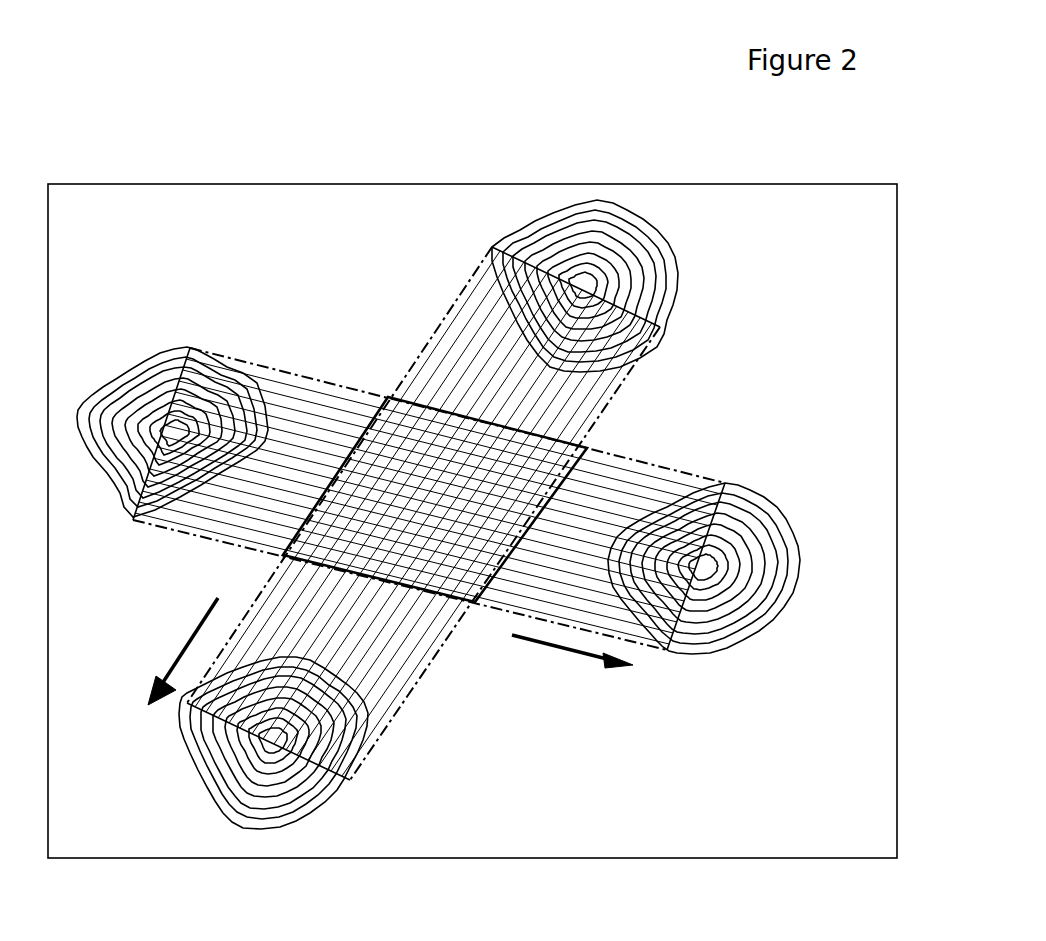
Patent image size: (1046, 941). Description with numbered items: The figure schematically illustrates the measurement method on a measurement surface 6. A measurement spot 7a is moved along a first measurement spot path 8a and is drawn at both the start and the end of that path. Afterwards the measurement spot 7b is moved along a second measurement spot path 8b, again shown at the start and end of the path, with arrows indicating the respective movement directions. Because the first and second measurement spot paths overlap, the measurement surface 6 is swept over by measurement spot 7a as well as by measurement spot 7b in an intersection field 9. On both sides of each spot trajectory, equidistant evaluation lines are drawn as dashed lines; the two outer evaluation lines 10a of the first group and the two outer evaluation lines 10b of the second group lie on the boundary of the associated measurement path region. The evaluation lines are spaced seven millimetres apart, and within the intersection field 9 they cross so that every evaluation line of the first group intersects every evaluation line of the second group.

The measurement surface 6 is at (853, 248).
The measurement spot 7a is at (98, 465).
The measurement spot 7b is at (592, 198).
The first measurement spot path 8a is at (570, 533).
The second measurement spot path 8b is at (567, 397).
The intersection field 9 is at (550, 460).
The outer evaluation lines 10a is at (310, 372).
The outer evaluation lines 10b is at (455, 300).